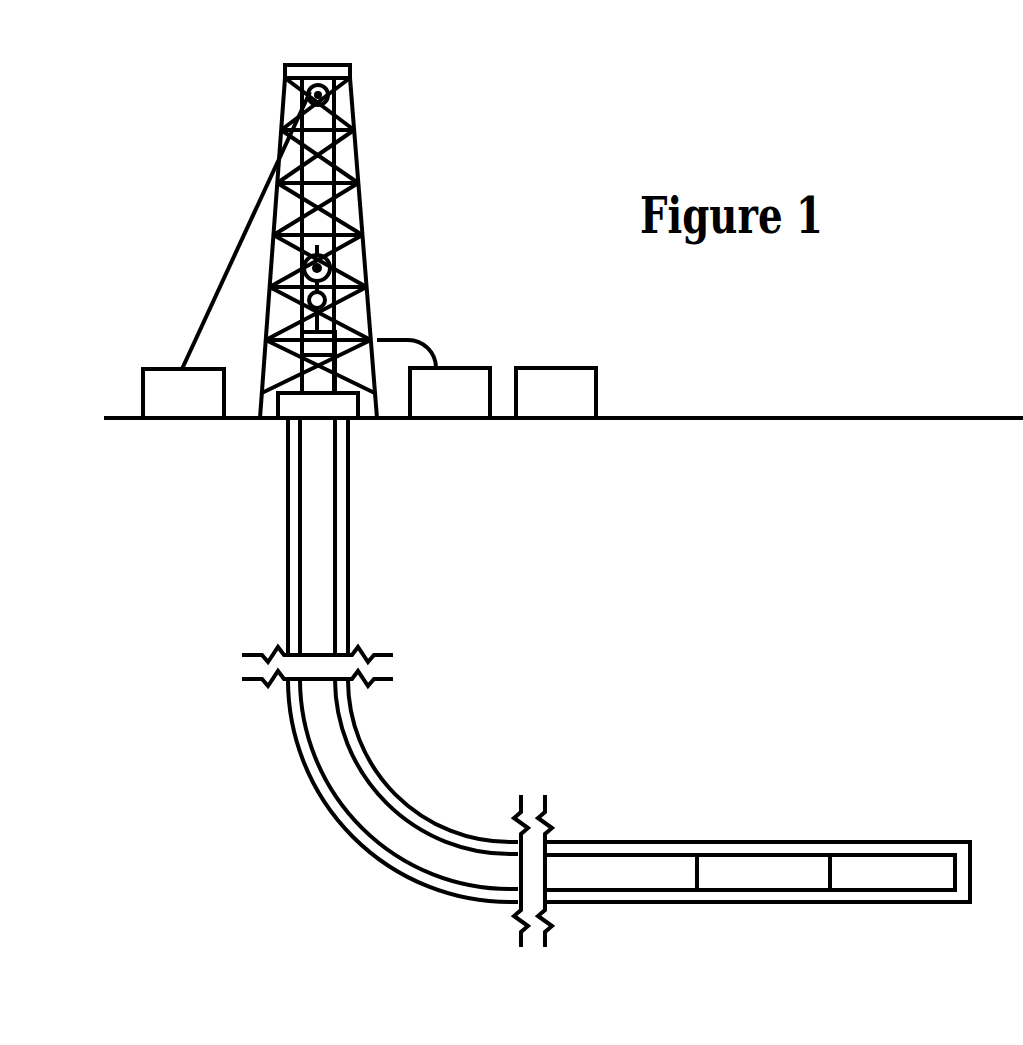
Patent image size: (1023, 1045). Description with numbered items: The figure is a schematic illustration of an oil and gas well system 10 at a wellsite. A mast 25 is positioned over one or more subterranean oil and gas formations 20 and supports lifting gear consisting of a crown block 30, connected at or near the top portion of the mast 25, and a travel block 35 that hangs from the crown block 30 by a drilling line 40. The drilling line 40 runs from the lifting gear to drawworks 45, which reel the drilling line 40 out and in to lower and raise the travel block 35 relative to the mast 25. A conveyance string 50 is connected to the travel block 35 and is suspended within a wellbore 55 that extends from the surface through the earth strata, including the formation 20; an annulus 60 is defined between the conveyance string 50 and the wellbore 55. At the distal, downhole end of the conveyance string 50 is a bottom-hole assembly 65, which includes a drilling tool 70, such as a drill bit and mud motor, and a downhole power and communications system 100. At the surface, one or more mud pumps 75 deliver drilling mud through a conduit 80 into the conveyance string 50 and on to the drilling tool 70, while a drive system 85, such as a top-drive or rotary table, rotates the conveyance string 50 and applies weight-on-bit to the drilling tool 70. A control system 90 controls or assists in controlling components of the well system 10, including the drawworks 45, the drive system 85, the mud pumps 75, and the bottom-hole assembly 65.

The well system 10 is at (196, 76).
The subterranean oil and gas formation 20 is at (707, 735).
The mast 25 is at (355, 111).
The crown block 30 is at (305, 78).
The travel block 35 is at (333, 266).
The drilling line 40 is at (240, 246).
The drawworks 45 is at (162, 368).
The conveyance string 50 is at (338, 493).
The wellbore 55 is at (345, 473).
The annulus 60 is at (817, 852).
The bottom-hole assembly 65 is at (712, 824).
The drilling tool 70 is at (893, 854).
The mud pump 75 is at (466, 368).
The conduit 80 is at (419, 342).
The drive system 85 is at (392, 308).
The control system 90 is at (573, 368).
The downhole power and communications system 100 is at (762, 853).